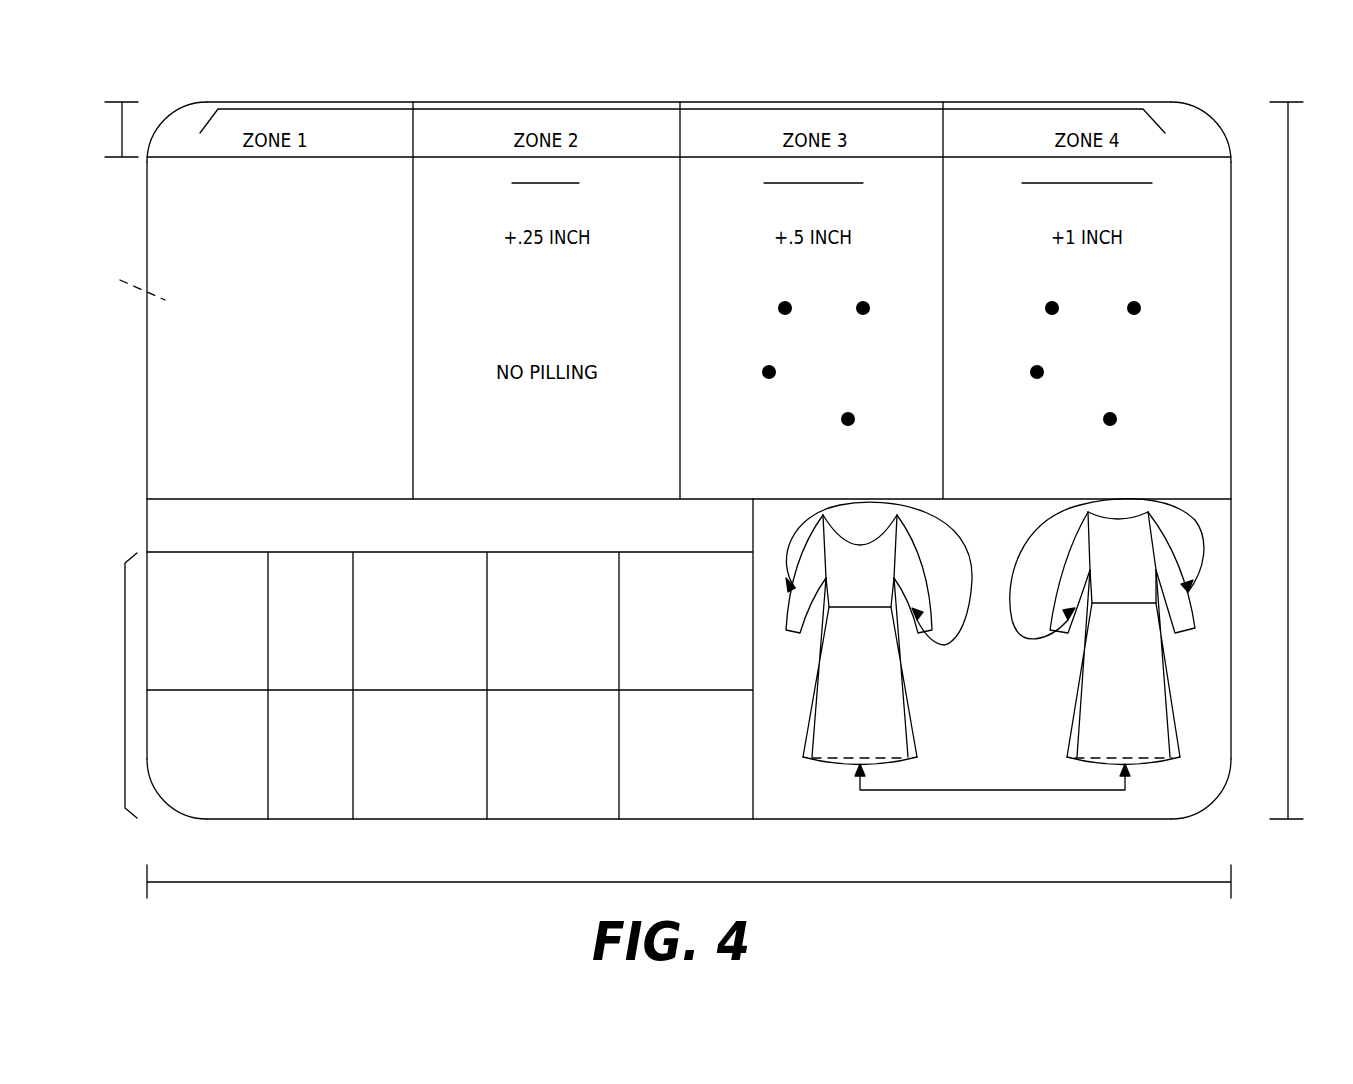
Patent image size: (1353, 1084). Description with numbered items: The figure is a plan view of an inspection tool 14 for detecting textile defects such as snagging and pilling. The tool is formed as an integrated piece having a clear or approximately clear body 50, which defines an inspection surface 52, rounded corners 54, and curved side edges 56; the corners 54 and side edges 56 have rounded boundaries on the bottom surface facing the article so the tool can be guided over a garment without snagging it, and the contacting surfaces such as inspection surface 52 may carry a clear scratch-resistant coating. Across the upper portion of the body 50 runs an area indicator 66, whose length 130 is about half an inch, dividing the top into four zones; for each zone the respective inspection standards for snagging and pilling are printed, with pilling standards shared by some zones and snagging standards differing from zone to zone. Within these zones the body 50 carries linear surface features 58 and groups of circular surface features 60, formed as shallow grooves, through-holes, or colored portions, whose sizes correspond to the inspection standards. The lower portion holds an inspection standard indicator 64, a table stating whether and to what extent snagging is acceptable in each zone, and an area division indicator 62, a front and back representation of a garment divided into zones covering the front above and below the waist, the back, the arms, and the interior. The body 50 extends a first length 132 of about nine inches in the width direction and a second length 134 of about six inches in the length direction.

The inspection tool 14 is at (175, 203).
The body 50 is at (160, 483).
The inspection surface 52 is at (129, 283).
The rounded corners 54 is at (166, 118).
The curved side edges 56 is at (922, 100).
The linear surface features 58 is at (522, 183).
The circular surface features 60 is at (880, 398).
The area division indicator 62 is at (1217, 655).
The inspection standard indicator 64 is at (125, 698).
The area indicator 66 is at (848, 108).
The length of area indicator 130 is at (118, 130).
The first length 132 is at (765, 883).
The second length 134 is at (1288, 505).